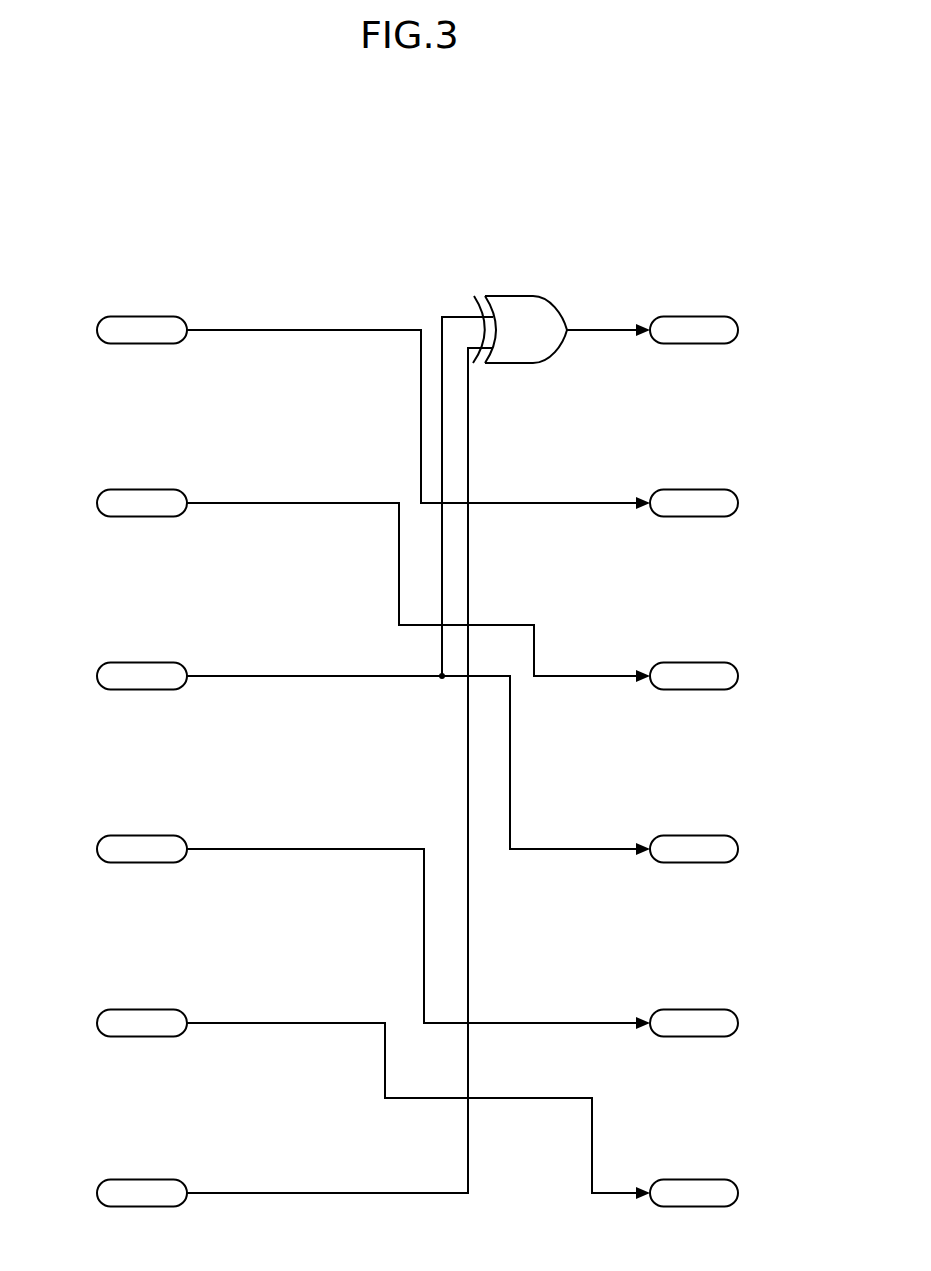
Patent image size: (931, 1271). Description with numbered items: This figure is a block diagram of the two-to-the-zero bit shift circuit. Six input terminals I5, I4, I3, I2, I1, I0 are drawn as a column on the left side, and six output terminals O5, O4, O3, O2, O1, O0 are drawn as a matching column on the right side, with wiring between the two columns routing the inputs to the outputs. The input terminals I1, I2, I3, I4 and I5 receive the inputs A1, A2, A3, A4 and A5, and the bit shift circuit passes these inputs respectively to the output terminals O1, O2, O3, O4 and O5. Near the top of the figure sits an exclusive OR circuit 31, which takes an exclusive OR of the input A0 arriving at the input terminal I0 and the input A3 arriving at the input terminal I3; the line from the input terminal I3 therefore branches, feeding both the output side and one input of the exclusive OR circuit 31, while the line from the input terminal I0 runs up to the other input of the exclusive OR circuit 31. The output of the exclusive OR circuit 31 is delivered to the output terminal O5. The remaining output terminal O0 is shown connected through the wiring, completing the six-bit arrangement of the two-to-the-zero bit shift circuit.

The exclusive OR circuit 31 is at (512, 318).
The input terminal I5 is at (113, 334).
The input terminal I4 is at (113, 507).
The input terminal I3 is at (113, 680).
The input terminal I2 is at (113, 853).
The input terminal I1 is at (113, 1027).
The input terminal I0 is at (113, 1197).
The output terminal O5 is at (726, 325).
The output terminal O4 is at (726, 498).
The output terminal O3 is at (726, 671).
The output terminal O2 is at (726, 844).
The output terminal O1 is at (726, 1018).
The output terminal O0 is at (726, 1188).